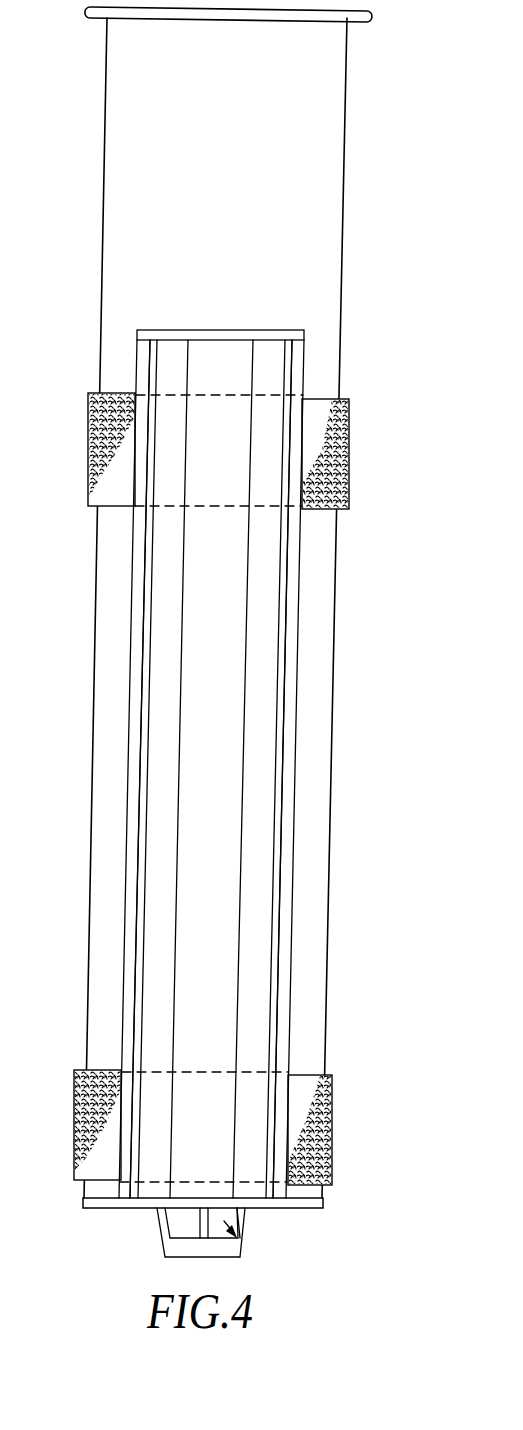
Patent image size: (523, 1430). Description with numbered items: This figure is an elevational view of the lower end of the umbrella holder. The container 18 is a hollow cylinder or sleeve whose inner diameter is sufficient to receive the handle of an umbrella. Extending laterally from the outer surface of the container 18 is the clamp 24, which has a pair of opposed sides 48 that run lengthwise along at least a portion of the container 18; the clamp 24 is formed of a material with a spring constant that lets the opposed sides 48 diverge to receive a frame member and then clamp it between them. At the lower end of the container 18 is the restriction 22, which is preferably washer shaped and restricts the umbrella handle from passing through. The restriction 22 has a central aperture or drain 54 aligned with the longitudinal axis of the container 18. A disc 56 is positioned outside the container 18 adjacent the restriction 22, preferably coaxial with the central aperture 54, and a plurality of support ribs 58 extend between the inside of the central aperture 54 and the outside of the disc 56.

The container 18 is at (346, 158).
The clamp 24 is at (217, 302).
The opposed sides 48 is at (137, 648).
The restriction 22 is at (115, 1208).
The disc 56 is at (160, 1240).
The support ribs 58 is at (248, 1220).
The central aperture 54 is at (240, 1240).